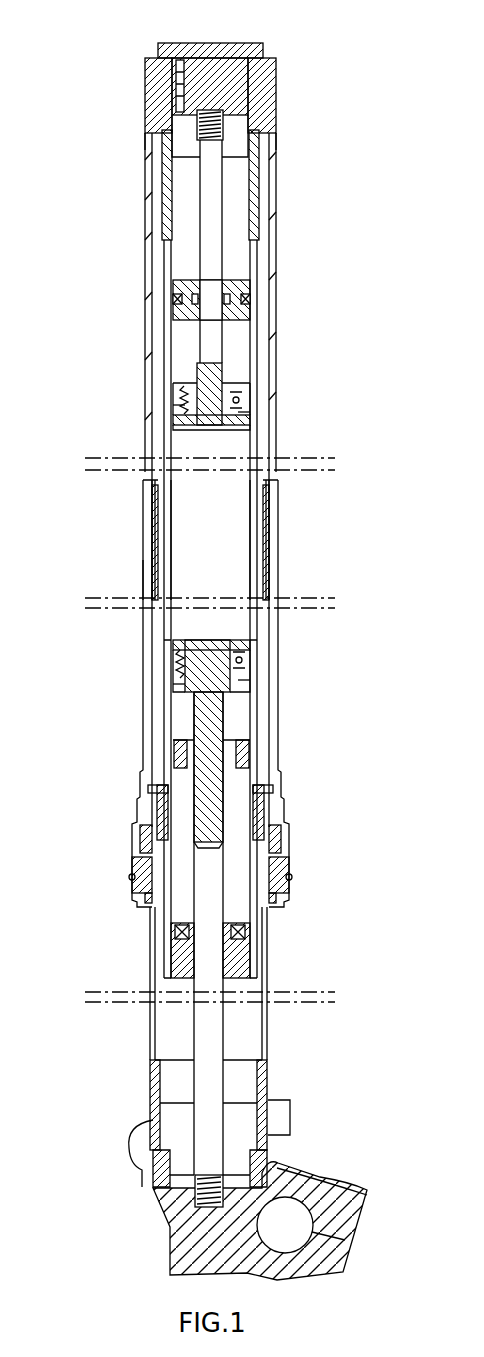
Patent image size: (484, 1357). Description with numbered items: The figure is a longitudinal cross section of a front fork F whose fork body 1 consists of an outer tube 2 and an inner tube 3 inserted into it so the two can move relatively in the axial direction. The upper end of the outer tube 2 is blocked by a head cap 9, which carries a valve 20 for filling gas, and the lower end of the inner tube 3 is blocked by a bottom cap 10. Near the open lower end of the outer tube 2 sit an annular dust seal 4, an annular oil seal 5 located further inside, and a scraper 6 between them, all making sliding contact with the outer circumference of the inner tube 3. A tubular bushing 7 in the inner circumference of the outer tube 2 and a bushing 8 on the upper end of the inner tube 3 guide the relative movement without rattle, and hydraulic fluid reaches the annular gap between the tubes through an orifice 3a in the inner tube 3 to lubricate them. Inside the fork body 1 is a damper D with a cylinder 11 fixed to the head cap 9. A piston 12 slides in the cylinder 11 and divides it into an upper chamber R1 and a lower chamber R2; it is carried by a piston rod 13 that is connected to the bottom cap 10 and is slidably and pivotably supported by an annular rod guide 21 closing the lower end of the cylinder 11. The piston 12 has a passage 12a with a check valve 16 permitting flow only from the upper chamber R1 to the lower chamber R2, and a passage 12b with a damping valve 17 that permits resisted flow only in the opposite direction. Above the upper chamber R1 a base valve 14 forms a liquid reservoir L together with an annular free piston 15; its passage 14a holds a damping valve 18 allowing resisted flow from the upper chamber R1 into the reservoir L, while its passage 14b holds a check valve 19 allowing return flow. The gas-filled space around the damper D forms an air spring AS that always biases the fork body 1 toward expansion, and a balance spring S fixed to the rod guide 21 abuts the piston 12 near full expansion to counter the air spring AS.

The front fork F is at (135, 53).
The fork body 1 is at (285, 520).
The outer tube 2 is at (275, 298).
The inner tube 3 is at (266, 700).
The orifice 3a is at (145, 580).
The dust seal 4 is at (142, 900).
The oil seal 5 is at (142, 850).
The scraper 6 is at (130, 875).
The tubular bushing 7 is at (270, 805).
The bushing 8 is at (265, 545).
The head cap 9 is at (243, 50).
The bottom cap 10 is at (128, 1140).
The cylinder 11 is at (258, 355).
The piston 12 is at (168, 678).
The passage 12a is at (250, 685).
The passage 12b is at (185, 690).
The piston rod 13 is at (215, 1040).
The base valve 14 is at (256, 409).
The passage 14a is at (172, 418).
The passage 14b is at (251, 422).
The free piston 15 is at (232, 290).
The check valve 16 is at (242, 664).
The damping valve 17 is at (178, 666).
The damping valve 18 is at (180, 400).
The check valve 19 is at (240, 400).
The valve 20 is at (152, 94).
The rod guide 21 is at (240, 958).
The air spring AS is at (148, 323).
The liquid reservoir L is at (240, 345).
The damper D is at (266, 623).
The upper chamber R1 is at (185, 500).
The lower chamber R2 is at (232, 730).
The balance spring S is at (240, 935).